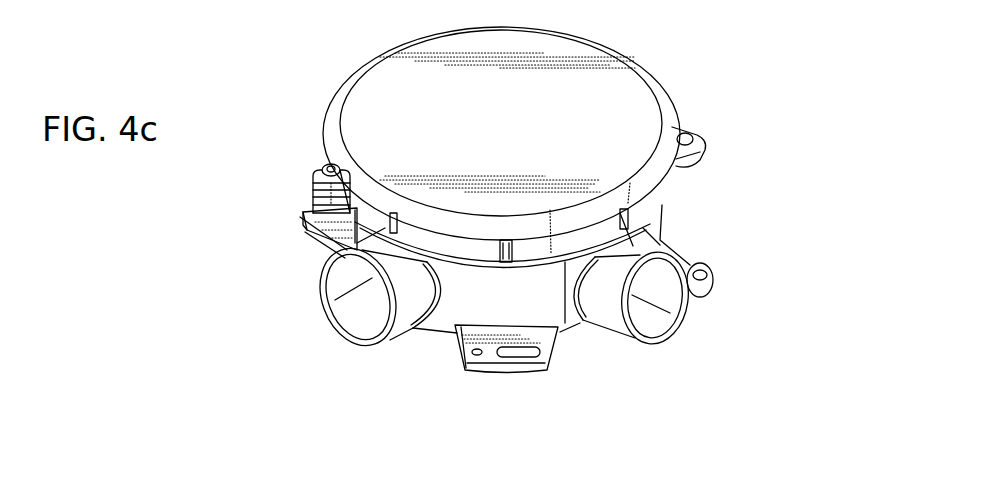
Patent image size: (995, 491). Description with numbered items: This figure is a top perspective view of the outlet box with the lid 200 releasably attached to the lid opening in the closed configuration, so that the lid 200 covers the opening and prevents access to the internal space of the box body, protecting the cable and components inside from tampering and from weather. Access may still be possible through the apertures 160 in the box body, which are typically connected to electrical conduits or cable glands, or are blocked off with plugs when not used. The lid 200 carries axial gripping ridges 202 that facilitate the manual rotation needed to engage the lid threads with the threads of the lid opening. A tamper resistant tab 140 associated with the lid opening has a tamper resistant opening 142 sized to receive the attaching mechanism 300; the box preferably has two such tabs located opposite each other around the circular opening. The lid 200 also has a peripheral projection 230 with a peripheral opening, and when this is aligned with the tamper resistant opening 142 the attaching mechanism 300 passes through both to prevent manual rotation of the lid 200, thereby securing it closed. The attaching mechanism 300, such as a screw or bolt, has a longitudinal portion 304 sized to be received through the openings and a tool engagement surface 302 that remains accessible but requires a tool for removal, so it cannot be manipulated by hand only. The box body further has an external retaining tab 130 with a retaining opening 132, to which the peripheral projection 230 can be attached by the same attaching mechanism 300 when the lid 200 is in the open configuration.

The lid 200 is at (670, 51).
The axial gripping ridges 202 is at (657, 226).
The tamper resistant tab 140 is at (731, 151).
The tamper resistant opening 142 is at (703, 121).
The attaching mechanism 300 is at (298, 172).
The tool engagement surface 302 is at (313, 152).
The peripheral projection 230 is at (293, 188).
The longitudinal portion 304 is at (310, 217).
The apertures 160 is at (349, 324).
The external retaining tab 130 is at (513, 392).
The retaining opening 132 is at (455, 362).